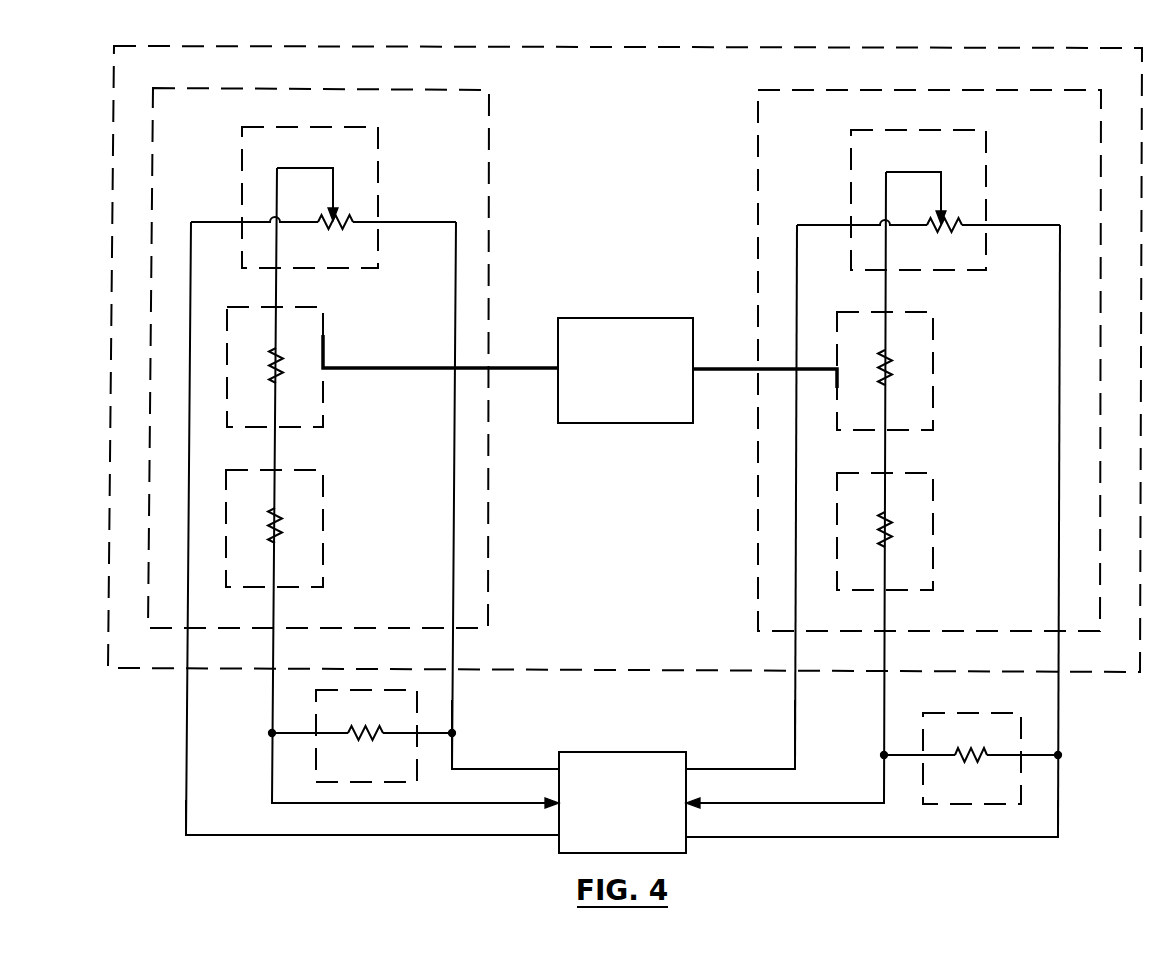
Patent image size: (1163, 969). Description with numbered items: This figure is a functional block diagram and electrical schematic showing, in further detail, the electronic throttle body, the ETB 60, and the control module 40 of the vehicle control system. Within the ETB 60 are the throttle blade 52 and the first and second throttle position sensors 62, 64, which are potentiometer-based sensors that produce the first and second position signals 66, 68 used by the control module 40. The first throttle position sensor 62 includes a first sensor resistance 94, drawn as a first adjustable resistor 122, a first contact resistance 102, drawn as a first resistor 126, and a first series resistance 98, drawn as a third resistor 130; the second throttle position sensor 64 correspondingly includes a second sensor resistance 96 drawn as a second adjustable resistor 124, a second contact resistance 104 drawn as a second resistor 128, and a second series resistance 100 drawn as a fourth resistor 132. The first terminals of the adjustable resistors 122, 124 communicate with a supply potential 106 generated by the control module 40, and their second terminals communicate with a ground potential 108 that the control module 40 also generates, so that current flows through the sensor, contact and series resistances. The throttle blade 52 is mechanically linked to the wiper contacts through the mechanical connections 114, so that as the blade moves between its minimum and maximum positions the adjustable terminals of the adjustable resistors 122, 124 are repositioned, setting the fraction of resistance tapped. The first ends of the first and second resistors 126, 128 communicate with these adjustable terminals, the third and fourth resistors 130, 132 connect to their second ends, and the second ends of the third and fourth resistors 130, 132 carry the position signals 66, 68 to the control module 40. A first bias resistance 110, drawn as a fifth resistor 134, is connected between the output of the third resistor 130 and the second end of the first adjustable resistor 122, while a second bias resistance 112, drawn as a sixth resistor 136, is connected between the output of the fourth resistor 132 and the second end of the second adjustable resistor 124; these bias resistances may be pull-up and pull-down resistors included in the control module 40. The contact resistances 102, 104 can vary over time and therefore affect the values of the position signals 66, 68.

The control module 40 is at (640, 752).
The throttle blade 52 is at (625, 318).
The ETB 60 is at (133, 668).
The first throttle position sensor 62 is at (489, 108).
The second throttle position sensor 64 is at (757, 150).
The first position signal 66 is at (272, 705).
The second position signal 68 is at (884, 710).
The first sensor resistance 94 is at (380, 137).
The second sensor resistance 96 is at (986, 137).
The first series resistance 98 is at (323, 500).
The second series resistance 100 is at (933, 502).
The first contact resistance 102 is at (323, 310).
The second contact resistance 104 is at (933, 340).
The supply potential 106 is at (452, 707).
The ground potential 108 is at (215, 835).
The first bias resistance 110 is at (365, 690).
The second bias resistance 112 is at (965, 712).
The mechanical connections 114 is at (435, 368).
The first adjustable resistor 122 is at (350, 219).
The second adjustable resistor 124 is at (960, 222).
The first resistor 126 is at (278, 378).
The second resistor 128 is at (888, 383).
The third resistor 130 is at (277, 540).
The fourth resistor 132 is at (888, 544).
The fifth resistor 134 is at (350, 736).
The sixth resistor 136 is at (982, 758).